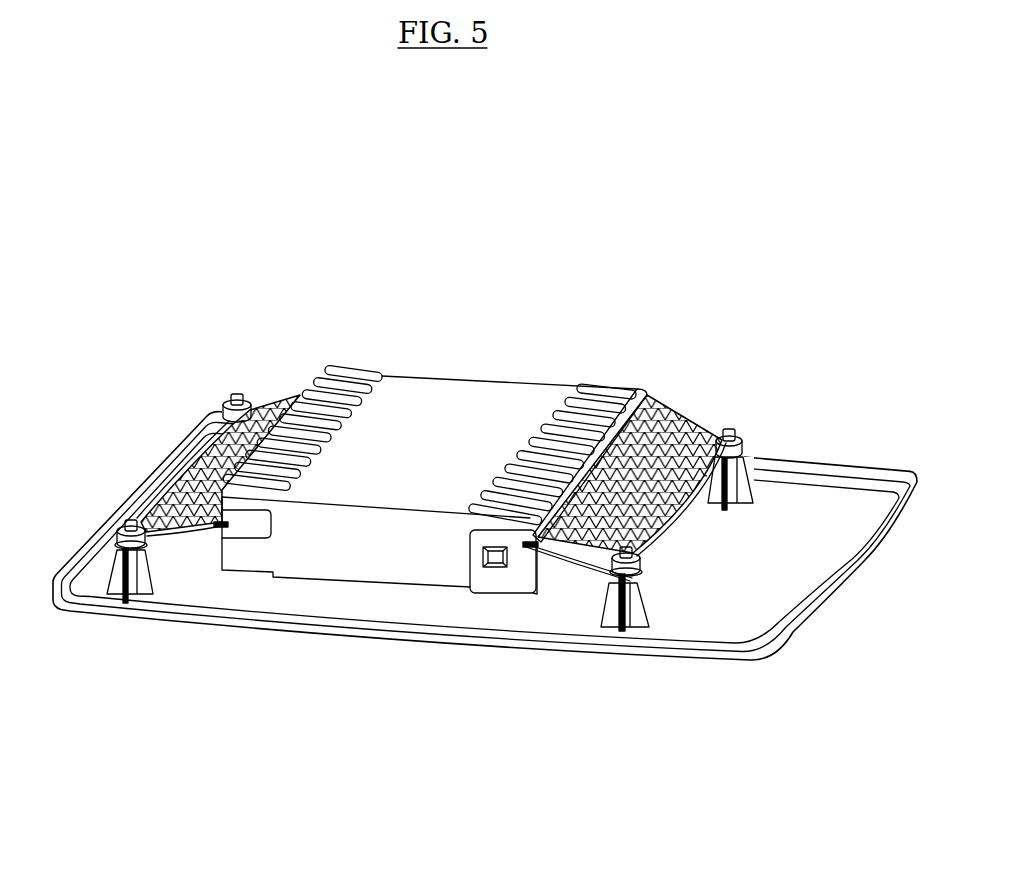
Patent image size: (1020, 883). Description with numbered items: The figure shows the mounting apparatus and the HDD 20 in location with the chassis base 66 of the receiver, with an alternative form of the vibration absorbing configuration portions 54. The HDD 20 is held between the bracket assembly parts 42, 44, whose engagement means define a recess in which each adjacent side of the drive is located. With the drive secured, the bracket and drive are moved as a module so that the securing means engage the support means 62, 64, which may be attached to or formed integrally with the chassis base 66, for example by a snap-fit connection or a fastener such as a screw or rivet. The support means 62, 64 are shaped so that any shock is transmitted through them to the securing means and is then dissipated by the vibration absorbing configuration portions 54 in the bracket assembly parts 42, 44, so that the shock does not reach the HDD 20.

The HDD 20 is at (440, 418).
The side lug 42 is at (345, 373).
The side lug 44 is at (603, 408).
The vibration absorbing configuration portions 54 is at (183, 470).
The support means 62 is at (228, 417).
The support means 64 is at (747, 473).
The chassis base 66 is at (640, 660).